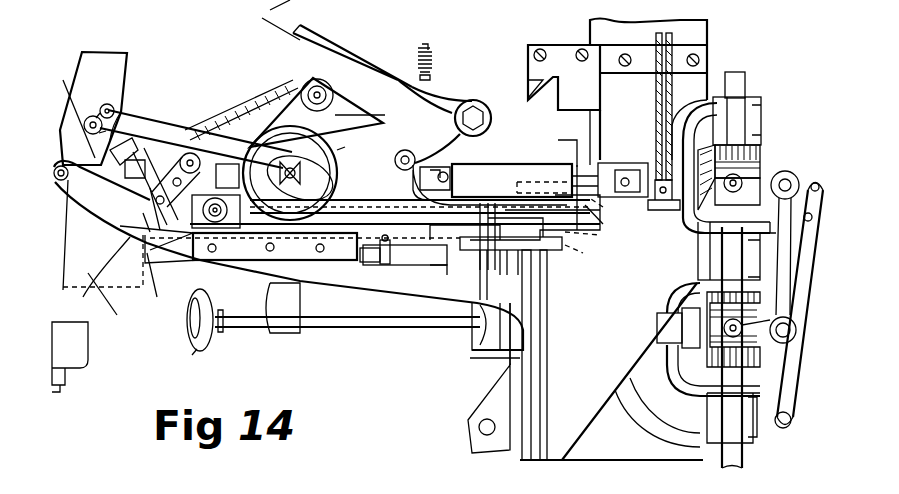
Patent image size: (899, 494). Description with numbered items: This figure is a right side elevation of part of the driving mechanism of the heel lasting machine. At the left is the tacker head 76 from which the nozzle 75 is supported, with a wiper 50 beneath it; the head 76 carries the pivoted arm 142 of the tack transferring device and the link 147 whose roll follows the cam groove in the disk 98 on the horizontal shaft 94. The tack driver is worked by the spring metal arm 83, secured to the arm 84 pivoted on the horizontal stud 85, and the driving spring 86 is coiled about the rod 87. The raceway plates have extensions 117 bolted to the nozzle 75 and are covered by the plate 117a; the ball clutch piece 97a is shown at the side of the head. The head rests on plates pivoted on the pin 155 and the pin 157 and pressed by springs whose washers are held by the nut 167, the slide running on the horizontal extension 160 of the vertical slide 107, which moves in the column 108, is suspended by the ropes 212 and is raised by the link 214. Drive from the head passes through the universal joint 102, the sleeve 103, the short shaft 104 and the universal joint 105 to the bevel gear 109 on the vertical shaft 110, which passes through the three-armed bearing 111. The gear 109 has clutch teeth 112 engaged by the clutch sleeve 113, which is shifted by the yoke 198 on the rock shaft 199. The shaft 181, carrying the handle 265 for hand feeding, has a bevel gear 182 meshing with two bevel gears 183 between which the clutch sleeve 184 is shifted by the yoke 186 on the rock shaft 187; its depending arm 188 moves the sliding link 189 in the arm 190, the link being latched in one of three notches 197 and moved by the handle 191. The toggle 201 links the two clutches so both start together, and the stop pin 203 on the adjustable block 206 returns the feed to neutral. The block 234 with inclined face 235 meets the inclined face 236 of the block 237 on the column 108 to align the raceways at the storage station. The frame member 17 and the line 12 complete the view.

The head 76 is at (94, 58).
The arm 142 is at (72, 108).
The link 147 is at (128, 122).
The nozzle 75 is at (288, 255).
The frame line 12 is at (325, 256).
The wiper 50 is at (83, 320).
The extension 117 is at (164, 252).
The plate 117a is at (222, 90).
The block 97a is at (228, 160).
The nut 167 is at (178, 258).
The spring metal arm 83 is at (317, 112).
The horizontal shaft 94 is at (290, 168).
The disk 98 is at (354, 144).
The arm 84 is at (440, 95).
The horizontal stud 85 is at (473, 108).
The rod 87 is at (418, 52).
The spring 86 is at (418, 65).
The universal joint 102 is at (455, 162).
The sleeve 103 is at (500, 165).
The block 206 is at (497, 215).
The frame 17 is at (508, 247).
The short shaft 104 is at (592, 167).
The universal joint 105 is at (607, 167).
The inclined face 235 is at (617, 204).
The block 234 is at (616, 220).
The block 237 is at (556, 52).
The inclined face 236 is at (532, 72).
The column 108 is at (700, 35).
The rope 212 is at (658, 90).
The vertical shaft 110 is at (745, 83).
The three-armed bearing 111 is at (702, 115).
The bevel gear 109 is at (762, 150).
The clutch teeth 112 is at (752, 160).
The clutch sleeve 113 is at (752, 168).
The rock shaft 199 is at (783, 243).
The rock shaft 187 is at (796, 340).
The toggle 201 is at (806, 326).
The depending arm 188 is at (790, 412).
The clutch sleeve 184 is at (775, 360).
The yoke 198 is at (697, 248).
The bevel gear 183 is at (697, 283).
The yoke 186 is at (687, 307).
The bevel gear 182 is at (700, 353).
The vertical slide 107 is at (578, 418).
The link 214 is at (470, 455).
The handle 191 is at (363, 240).
The pin 157 is at (258, 262).
The shaft 181 is at (356, 328).
The horizontal extension 160 is at (185, 262).
The handle 265 is at (189, 367).
The sliding link 189 is at (430, 262).
The arm 190 is at (382, 265).
The notch 197 is at (375, 250).
The stop pin 203 is at (484, 250).
The pin 155 is at (595, 259).